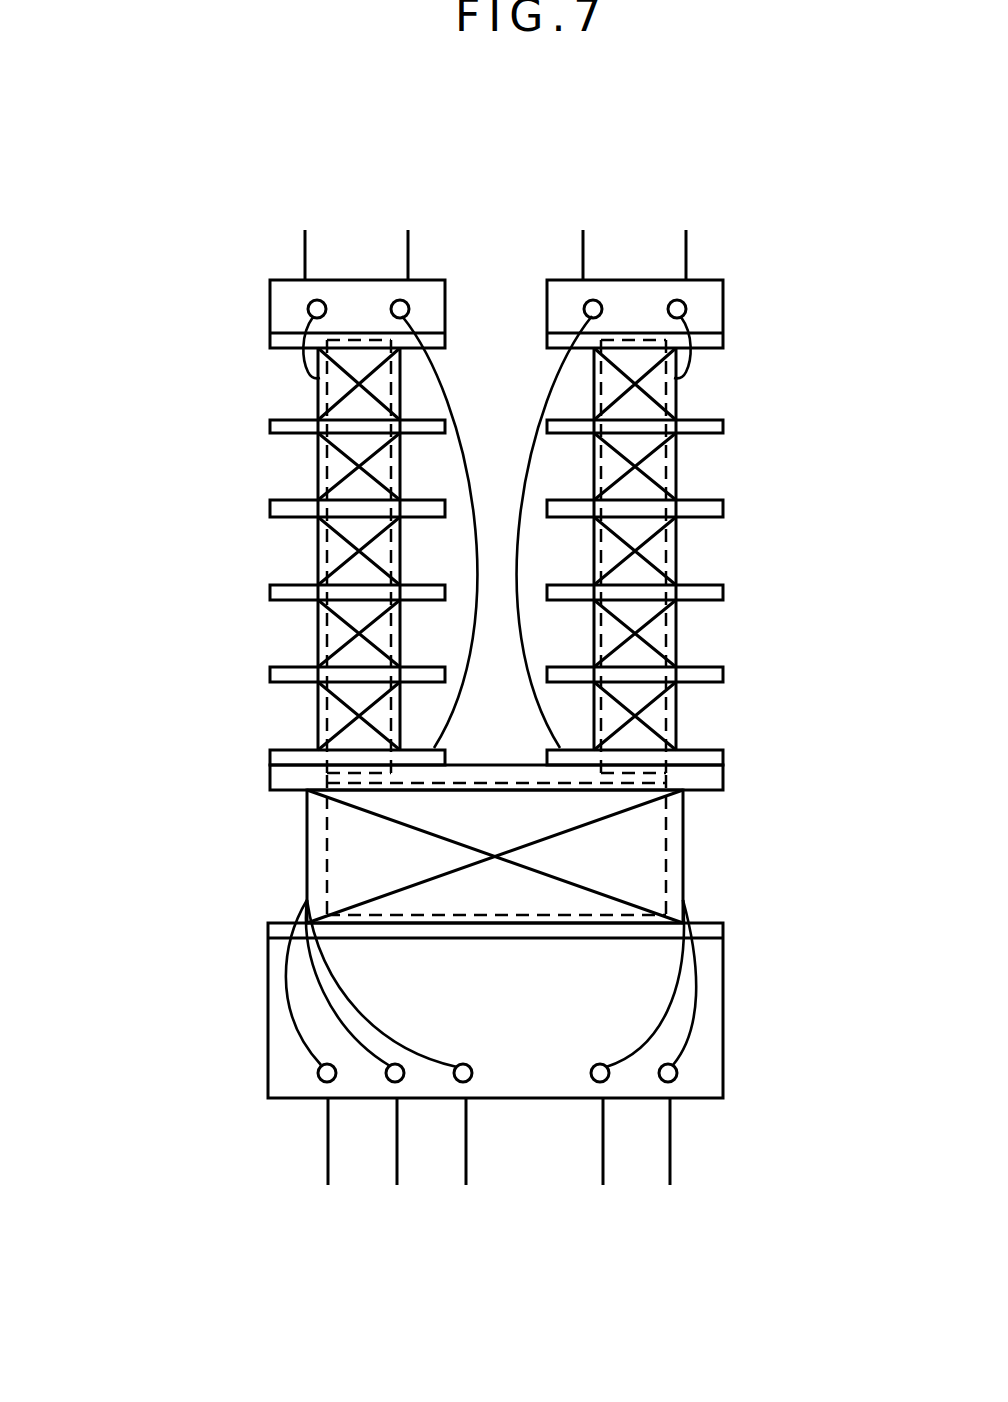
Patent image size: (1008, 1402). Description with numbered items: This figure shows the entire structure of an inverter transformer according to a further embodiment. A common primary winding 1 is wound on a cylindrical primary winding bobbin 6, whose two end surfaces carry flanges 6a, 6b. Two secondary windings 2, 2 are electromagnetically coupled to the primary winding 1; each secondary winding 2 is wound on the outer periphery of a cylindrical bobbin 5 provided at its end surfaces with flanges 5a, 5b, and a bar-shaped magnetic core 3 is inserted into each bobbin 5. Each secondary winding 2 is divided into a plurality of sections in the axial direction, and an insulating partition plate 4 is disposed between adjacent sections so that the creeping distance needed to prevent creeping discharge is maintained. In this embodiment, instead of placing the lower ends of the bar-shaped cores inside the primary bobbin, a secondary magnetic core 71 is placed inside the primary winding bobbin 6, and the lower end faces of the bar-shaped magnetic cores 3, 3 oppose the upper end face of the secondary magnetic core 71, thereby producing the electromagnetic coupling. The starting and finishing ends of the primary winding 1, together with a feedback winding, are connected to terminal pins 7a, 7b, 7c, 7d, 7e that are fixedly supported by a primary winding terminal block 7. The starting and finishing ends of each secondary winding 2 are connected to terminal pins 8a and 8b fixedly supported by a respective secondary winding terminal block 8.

The primary winding 1 is at (325, 848).
The secondary winding 2 is at (318, 378).
The bar-shaped magnetic core 3 is at (325, 548).
The insulating partition plate 4 is at (268, 508).
The cylindrical bobbin 5 is at (318, 395).
The flange 5a is at (268, 335).
The flange 5b is at (268, 757).
The primary winding bobbin 6 is at (683, 840).
The flange 6a is at (723, 773).
The flange 6b is at (723, 930).
The primary winding terminal block 7 is at (723, 985).
The secondary magnetic core 71 is at (666, 875).
The terminal pin 7a is at (328, 1165).
The terminal pin 7b is at (397, 1165).
The terminal pin 7c is at (466, 1165).
The terminal pin 7d is at (603, 1160).
The terminal pin 7e is at (670, 1157).
The secondary winding terminal block 8 is at (268, 308).
The terminal pin 8a is at (303, 245).
The terminal pin 8b is at (407, 250).